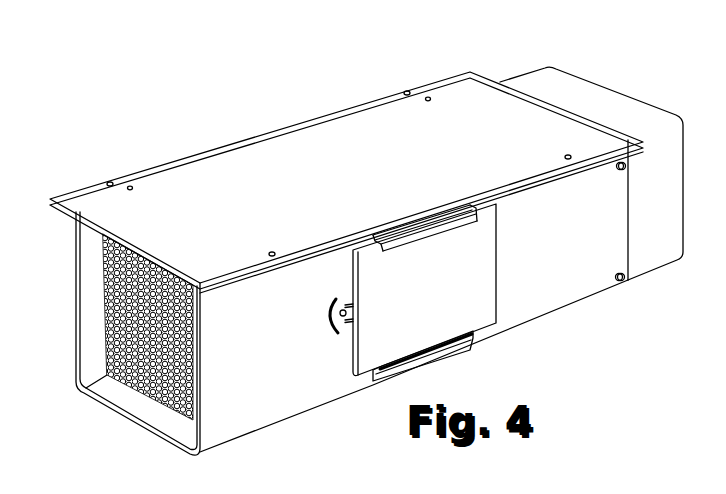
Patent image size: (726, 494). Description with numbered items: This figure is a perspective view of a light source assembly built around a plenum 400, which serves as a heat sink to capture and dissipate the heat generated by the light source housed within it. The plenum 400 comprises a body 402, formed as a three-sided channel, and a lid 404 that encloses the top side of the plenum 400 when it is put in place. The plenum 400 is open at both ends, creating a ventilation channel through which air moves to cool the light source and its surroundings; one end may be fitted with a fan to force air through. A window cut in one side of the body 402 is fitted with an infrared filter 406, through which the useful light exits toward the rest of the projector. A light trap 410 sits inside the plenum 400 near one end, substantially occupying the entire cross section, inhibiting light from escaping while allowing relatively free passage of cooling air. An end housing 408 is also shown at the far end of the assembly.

The plenum 400 is at (188, 118).
The body 402 is at (287, 354).
The lid 404 is at (335, 193).
The infrared filter 406 is at (444, 298).
The end housing 408 is at (674, 204).
The light trap 410 is at (133, 387).